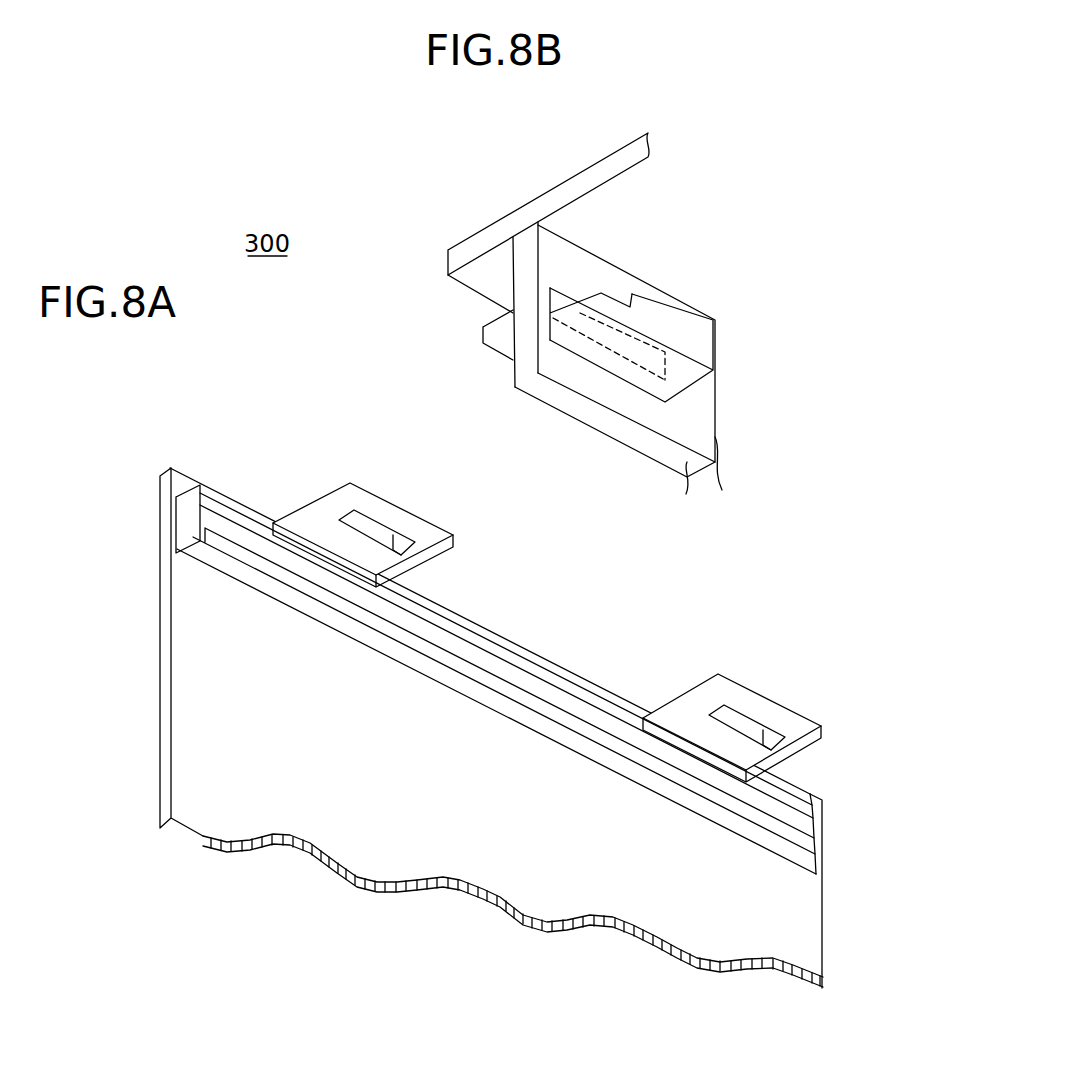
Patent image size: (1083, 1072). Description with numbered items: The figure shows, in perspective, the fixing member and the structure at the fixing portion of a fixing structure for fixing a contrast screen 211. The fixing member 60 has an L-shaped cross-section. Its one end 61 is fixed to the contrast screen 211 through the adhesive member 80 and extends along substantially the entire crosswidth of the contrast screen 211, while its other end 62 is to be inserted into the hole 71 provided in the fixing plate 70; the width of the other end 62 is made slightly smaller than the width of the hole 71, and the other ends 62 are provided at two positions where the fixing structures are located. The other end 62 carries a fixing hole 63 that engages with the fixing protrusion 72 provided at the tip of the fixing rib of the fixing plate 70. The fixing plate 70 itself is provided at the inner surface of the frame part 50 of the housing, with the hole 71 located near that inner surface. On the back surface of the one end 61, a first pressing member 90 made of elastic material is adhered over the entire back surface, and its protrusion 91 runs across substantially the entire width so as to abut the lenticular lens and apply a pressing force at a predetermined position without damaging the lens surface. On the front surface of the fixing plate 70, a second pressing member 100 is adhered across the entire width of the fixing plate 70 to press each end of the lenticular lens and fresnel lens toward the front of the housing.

In FIG. 8B, the frame part 50 is at (527, 213).
In FIG. 8A, the fixing member 60 is at (447, 555).
In FIG. 8A, the one end of the fixing member 61 is at (195, 495).
In FIG. 8A, the other end of the fixing member 62 is at (387, 498).
In FIG. 8A, the fixing hole 63 is at (413, 548).
In FIG. 8B, the fixing plate 70 is at (693, 425).
In FIG. 8B, the hole 71 is at (558, 303).
In FIG. 8B, the fixing protrusion 72 is at (657, 313).
In FIG. 8A, the adhesive member 80 is at (177, 492).
In FIG. 8A, the first pressing member 90 is at (237, 527).
In FIG. 8A, the protrusion 91 is at (237, 552).
In FIG. 8B, the second pressing member 100 is at (487, 340).
In FIG. 8A, the contrast screen 211 is at (220, 830).